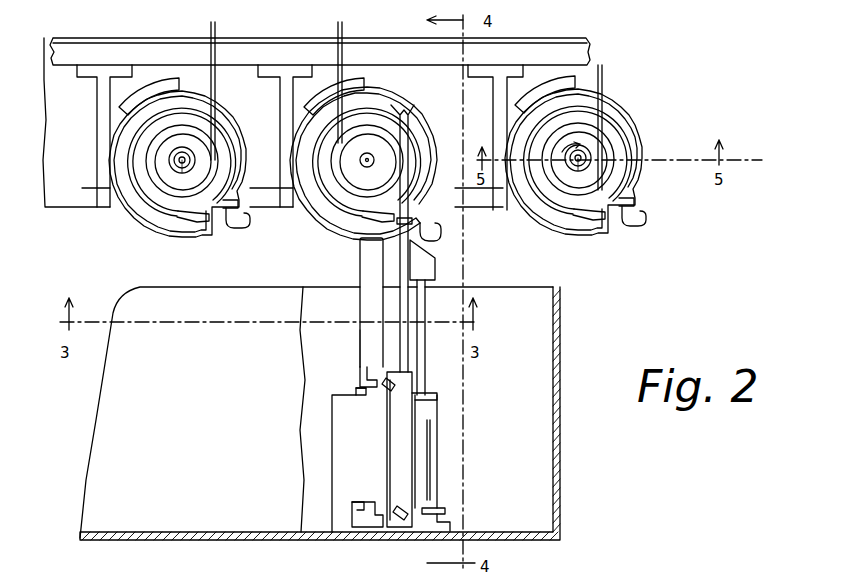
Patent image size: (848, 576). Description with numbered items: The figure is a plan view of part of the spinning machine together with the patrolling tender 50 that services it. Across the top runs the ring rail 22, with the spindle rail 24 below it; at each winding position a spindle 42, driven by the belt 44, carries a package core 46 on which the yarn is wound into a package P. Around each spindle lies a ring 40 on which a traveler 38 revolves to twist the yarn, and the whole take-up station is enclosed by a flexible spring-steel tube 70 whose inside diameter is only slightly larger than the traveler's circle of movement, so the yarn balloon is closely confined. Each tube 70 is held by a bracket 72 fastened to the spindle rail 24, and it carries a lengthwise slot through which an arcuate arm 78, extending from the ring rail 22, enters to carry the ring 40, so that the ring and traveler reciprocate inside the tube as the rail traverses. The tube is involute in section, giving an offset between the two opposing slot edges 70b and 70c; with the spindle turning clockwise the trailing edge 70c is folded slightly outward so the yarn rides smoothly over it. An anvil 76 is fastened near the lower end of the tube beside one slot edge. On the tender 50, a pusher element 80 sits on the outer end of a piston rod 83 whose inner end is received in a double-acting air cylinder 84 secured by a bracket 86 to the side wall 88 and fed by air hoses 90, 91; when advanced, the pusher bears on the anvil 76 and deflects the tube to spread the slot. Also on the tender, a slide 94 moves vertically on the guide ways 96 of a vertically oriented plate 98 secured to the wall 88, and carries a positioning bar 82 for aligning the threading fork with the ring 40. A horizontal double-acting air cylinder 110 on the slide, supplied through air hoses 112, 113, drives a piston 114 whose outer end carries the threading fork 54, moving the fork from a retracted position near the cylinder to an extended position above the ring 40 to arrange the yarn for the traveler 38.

The ring rail 22 is at (284, 42).
The spindle rail 24 is at (62, 208).
The traveler 38 is at (162, 157).
The ring 40 is at (372, 113).
The spindle 42 is at (172, 170).
The driven belt 44 is at (217, 29).
The package core 46 is at (176, 162).
The tender 50 is at (211, 550).
The threading fork 54 is at (407, 106).
The tube 70 is at (224, 112).
The edge of slot 70b is at (238, 202).
The trailing edge 70c is at (203, 224).
The bracket 72 is at (158, 84).
The anvil 76 is at (248, 224).
The arcuate arm 78 is at (97, 113).
The pusher element 80 is at (428, 265).
The positioning bar 82 is at (368, 258).
The piston rod 83 is at (426, 303).
The double-acting air cylinder 84 is at (435, 433).
The bracket 86 is at (452, 527).
The wall 88 is at (526, 541).
The air hose 90 is at (430, 400).
The air hose 91 is at (440, 512).
The slide 94 is at (364, 377).
The guide ways 96 is at (372, 390).
The vertically oriented plate 98 is at (342, 457).
The double-acting air cylinder 110 is at (400, 430).
The air hose 112 is at (403, 507).
The air hose 113 is at (392, 380).
The piston 114 is at (400, 300).
The package P is at (212, 172).